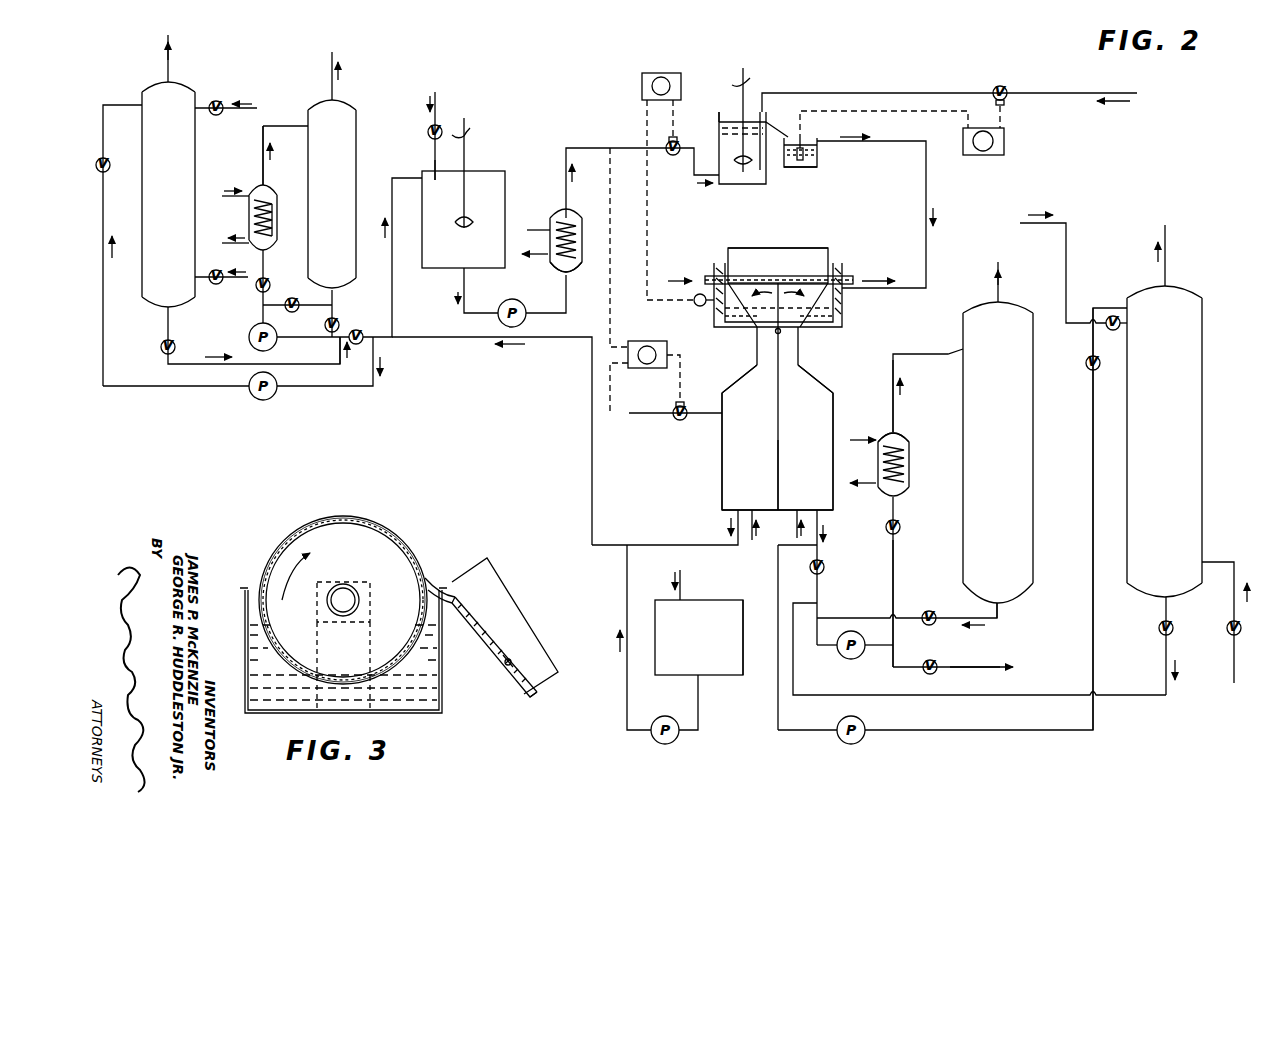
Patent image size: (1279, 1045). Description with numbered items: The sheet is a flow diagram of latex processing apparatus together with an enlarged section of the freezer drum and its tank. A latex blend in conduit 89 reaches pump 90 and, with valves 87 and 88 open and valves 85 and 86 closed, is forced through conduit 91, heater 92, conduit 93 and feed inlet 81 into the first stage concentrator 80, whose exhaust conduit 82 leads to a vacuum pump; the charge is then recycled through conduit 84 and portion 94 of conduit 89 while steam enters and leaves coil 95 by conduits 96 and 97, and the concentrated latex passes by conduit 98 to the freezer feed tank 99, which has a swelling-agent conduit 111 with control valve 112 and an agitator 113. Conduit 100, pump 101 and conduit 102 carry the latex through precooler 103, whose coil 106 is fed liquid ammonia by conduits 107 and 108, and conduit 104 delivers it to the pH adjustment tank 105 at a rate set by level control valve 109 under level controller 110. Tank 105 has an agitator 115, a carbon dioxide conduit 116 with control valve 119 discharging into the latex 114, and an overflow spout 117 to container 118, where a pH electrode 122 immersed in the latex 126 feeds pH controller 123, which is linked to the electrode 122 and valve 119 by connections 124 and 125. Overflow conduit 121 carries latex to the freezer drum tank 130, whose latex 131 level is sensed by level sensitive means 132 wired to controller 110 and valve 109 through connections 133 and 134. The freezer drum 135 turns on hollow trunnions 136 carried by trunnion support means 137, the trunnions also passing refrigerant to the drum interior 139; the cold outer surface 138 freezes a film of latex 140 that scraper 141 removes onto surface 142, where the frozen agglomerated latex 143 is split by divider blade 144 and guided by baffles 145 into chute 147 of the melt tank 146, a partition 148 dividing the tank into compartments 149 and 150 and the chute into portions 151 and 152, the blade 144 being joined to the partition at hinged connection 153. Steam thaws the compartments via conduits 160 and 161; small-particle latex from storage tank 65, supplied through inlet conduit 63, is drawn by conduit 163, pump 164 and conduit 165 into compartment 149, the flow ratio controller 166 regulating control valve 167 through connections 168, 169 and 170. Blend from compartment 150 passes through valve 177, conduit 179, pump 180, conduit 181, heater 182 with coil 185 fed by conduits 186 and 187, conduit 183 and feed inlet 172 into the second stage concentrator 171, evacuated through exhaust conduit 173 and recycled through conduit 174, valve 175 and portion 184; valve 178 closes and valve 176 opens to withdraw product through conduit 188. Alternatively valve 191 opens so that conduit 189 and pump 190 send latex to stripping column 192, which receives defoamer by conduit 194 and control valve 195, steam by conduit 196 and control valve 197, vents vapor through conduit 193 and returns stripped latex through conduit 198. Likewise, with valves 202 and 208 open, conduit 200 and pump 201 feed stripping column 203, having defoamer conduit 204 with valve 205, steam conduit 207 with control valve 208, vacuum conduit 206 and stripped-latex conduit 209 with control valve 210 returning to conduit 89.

In FIG. 2, the inlet conduit 63 is at (683, 576).
In FIG. 2, the storage tank 65 is at (752, 592).
In FIG. 2, the first stage concentrator 80 is at (308, 112).
In FIG. 2, the feed inlet 81 is at (298, 128).
In FIG. 2, the exhaust conduit 82 is at (331, 66).
In FIG. 2, the conduit 84 is at (334, 292).
In FIG. 2, the valve 85 is at (325, 325).
In FIG. 2, the valve 86 is at (296, 302).
In FIG. 2, the valve 87 is at (360, 332).
In FIG. 2, the valve 88 is at (270, 285).
In FIG. 2, the conduit 89 is at (404, 337).
In FIG. 2, the pump 90 is at (249, 337).
In FIG. 2, the conduit 91 is at (265, 266).
In FIG. 2, the heater 92 is at (277, 240).
In FIG. 2, the conduit 93 is at (262, 155).
In FIG. 2, the portion of conduit 94 is at (316, 343).
In FIG. 2, the coil 95 is at (278, 213).
In FIG. 2, the conduit 96 is at (228, 200).
In FIG. 2, the conduit 97 is at (239, 243).
In FIG. 2, the conduit 98 is at (392, 248).
In FIG. 2, the freezer feed tank 99 is at (505, 172).
In FIG. 2, the conduit 100 is at (466, 278).
In FIG. 2, the pump 101 is at (521, 306).
In FIG. 2, the conduit 102 is at (568, 308).
In FIG. 2, the precooler 103 is at (579, 269).
In FIG. 2, the conduit 104 is at (587, 148).
In FIG. 2, the pH adjustment tank 105 is at (719, 118).
In FIG. 2, the coil 106 is at (580, 240).
In FIG. 2, the conduit 107 is at (533, 230).
In FIG. 2, the conduit 108 is at (540, 254).
In FIG. 2, the level control valve 109 is at (673, 156).
In FIG. 2, the level controller 110 is at (676, 73).
In FIG. 2, the conduit 111 is at (433, 158).
In FIG. 2, the control valve 112 is at (428, 133).
In FIG. 2, the agitator 113 is at (467, 131).
In FIG. 2, the latex 114 is at (742, 186).
In FIG. 2, the agitator 115 is at (745, 76).
In FIG. 2, the conduit 116 is at (897, 93).
In FIG. 2, the overflow spout 117 is at (780, 130).
In FIG. 2, the container 118 is at (818, 166).
In FIG. 2, the control valve 119 is at (1003, 86).
In FIG. 2, the overflow conduit 121 is at (882, 141).
In FIG. 2, the pH electrode 122 is at (806, 158).
In FIG. 2, the pH controller 123 is at (992, 155).
In FIG. 2, the connection 124 is at (882, 111).
In FIG. 2, the connection 125 is at (1003, 122).
In FIG. 2, the latex 126 is at (789, 168).
In FIG. 2, the freezer drum tank 130 is at (842, 318).
In FIG. 3, the freezer drum tank 130 is at (444, 708).
In FIG. 2, the latex 131 is at (837, 324).
In FIG. 3, the latex 131 is at (343, 662).
In FIG. 2, the latex level sensitive means 132 is at (693, 300).
In FIG. 2, the connection 133 is at (648, 228).
In FIG. 2, the connection 134 is at (677, 120).
In FIG. 2, the freezer drum 135 is at (784, 257).
In FIG. 3, the freezer drum 135 is at (423, 548).
In FIG. 2, the hollow trunnions 136 is at (838, 262).
In FIG. 3, the hollow trunnions 136 is at (360, 600).
In FIG. 3, the trunnion support means 137 is at (376, 647).
In FIG. 3, the outer freezer drum surface 138 is at (290, 652).
In FIG. 3, the drum interior 139 is at (343, 600).
In FIG. 3, the film of latex 140 is at (379, 518).
In FIG. 2, the scraper 141 is at (760, 268).
In FIG. 3, the scraper 141 is at (430, 583).
In FIG. 2, the surface 142 is at (778, 305).
In FIG. 3, the surface 142 is at (478, 630).
In FIG. 3, the frozen and agglomerated latex 143 is at (510, 666).
In FIG. 2, the divider blade 144 is at (792, 311).
In FIG. 3, the divider blade 144 is at (539, 689).
In FIG. 2, the baffles 145 is at (757, 346).
In FIG. 3, the baffles 145 is at (505, 605).
In FIG. 2, the melt tank 146 is at (720, 466).
In FIG. 2, the chute 147 is at (814, 374).
In FIG. 2, the partition 148 is at (782, 460).
In FIG. 2, the compartment 149 is at (744, 451).
In FIG. 2, the compartment 150 is at (799, 475).
In FIG. 2, the chute portion 151 is at (763, 360).
In FIG. 2, the chute portion 152 is at (790, 358).
In FIG. 2, the hinged connection 153 is at (777, 366).
In FIG. 2, the conduit 160 is at (752, 540).
In FIG. 2, the conduit 161 is at (818, 518).
In FIG. 2, the conduit 163 is at (700, 692).
In FIG. 2, the pump 164 is at (668, 716).
In FIG. 2, the conduit 165 is at (627, 598).
In FIG. 2, the flow ratio controller 166 is at (668, 352).
In FIG. 2, the control valve 167 is at (686, 410).
In FIG. 2, the connection 168 is at (611, 186).
In FIG. 2, the connection 169 is at (612, 397).
In FIG. 2, the connection 170 is at (682, 378).
In FIG. 2, the second stage concentrator 171 is at (1036, 575).
In FIG. 2, the latex feed inlet 172 is at (958, 352).
In FIG. 2, the exhaust conduit 173 is at (996, 270).
In FIG. 2, the conduit 174 is at (998, 610).
In FIG. 2, the valve 175 is at (931, 610).
In FIG. 2, the valve 176 is at (931, 660).
In FIG. 2, the valve 177 is at (824, 566).
In FIG. 2, the valve 178 is at (900, 527).
In FIG. 2, the conduit 179 is at (818, 596).
In FIG. 2, the pump 180 is at (860, 640).
In FIG. 2, the conduit 181 is at (895, 560).
In FIG. 2, the heater 182 is at (905, 437).
In FIG. 2, the conduit 183 is at (900, 380).
In FIG. 2, the portion of conduit 184 is at (820, 646).
In FIG. 2, the coil 185 is at (909, 470).
In FIG. 2, the conduit 186 is at (868, 442).
In FIG. 2, the conduit 187 is at (868, 483).
In FIG. 2, the conduit 188 is at (958, 668).
In FIG. 2, the conduit 189 is at (779, 568).
In FIG. 2, the pump 190 is at (857, 723).
In FIG. 2, the valve 191 is at (1090, 370).
In FIG. 2, the stripping column 192 is at (1204, 365).
In FIG. 2, the conduit 193 is at (1167, 252).
In FIG. 2, the conduit 194 is at (1067, 283).
In FIG. 2, the control valve 195 is at (1113, 316).
In FIG. 2, the conduit 196 is at (1236, 654).
In FIG. 2, the control valve 197 is at (1230, 622).
In FIG. 2, the conduit 198 is at (1166, 611).
In FIG. 2, the conduit 200 is at (324, 388).
In FIG. 2, the pump 201 is at (252, 394).
In FIG. 2, the valve 202 is at (106, 172).
In FIG. 2, the stripping column 203 is at (141, 130).
In FIG. 2, the conduit 204 is at (232, 98).
In FIG. 2, the valve 205 is at (217, 116).
In FIG. 2, the conduit 206 is at (169, 80).
In FIG. 2, the conduit 207 is at (244, 270).
In FIG. 2, the control valve 208 is at (218, 285).
In FIG. 2, the conduit 209 is at (172, 315).
In FIG. 2, the control valve 210 is at (176, 347).